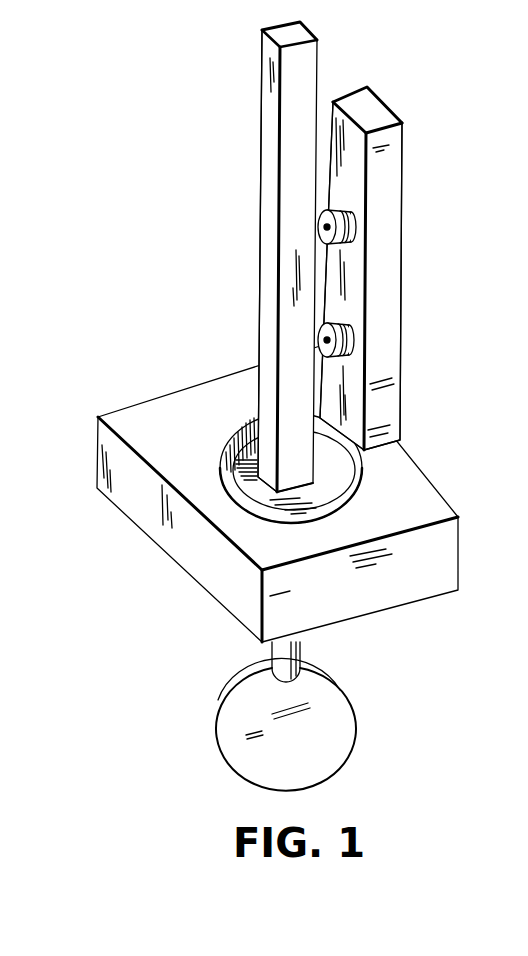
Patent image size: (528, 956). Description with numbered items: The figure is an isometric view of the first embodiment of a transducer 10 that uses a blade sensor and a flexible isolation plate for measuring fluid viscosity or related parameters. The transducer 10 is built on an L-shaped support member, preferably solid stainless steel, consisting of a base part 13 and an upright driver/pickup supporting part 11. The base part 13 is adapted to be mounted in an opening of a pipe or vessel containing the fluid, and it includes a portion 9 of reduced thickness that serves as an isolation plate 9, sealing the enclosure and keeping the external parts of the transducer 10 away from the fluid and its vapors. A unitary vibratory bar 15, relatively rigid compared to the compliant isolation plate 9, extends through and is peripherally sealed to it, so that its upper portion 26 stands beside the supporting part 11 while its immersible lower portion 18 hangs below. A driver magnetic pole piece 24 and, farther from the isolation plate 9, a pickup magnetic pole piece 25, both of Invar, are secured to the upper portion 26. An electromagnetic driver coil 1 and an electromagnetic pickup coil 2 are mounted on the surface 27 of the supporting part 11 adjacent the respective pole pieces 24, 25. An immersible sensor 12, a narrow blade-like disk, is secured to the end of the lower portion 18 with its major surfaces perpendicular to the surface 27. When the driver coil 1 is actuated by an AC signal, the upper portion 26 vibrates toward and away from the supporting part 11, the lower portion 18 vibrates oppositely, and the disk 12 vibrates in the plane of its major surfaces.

The transducer 10 is at (87, 282).
The base part 13 is at (415, 485).
The isolation plate 9 is at (262, 498).
The vibratory bar 15 is at (294, 257).
The upper portion 26 is at (262, 112).
The driver/pickup supporting part 11 is at (386, 268).
The surface 27 is at (357, 165).
The electromagnetic pickup coil 2 is at (314, 231).
The pickup magnetic pole piece 25 is at (323, 229).
The electromagnetic driver coil 1 is at (305, 339).
The driver magnetic pole piece 24 is at (320, 340).
The lower portion 18 is at (302, 646).
The immersible sensor 12 is at (353, 720).